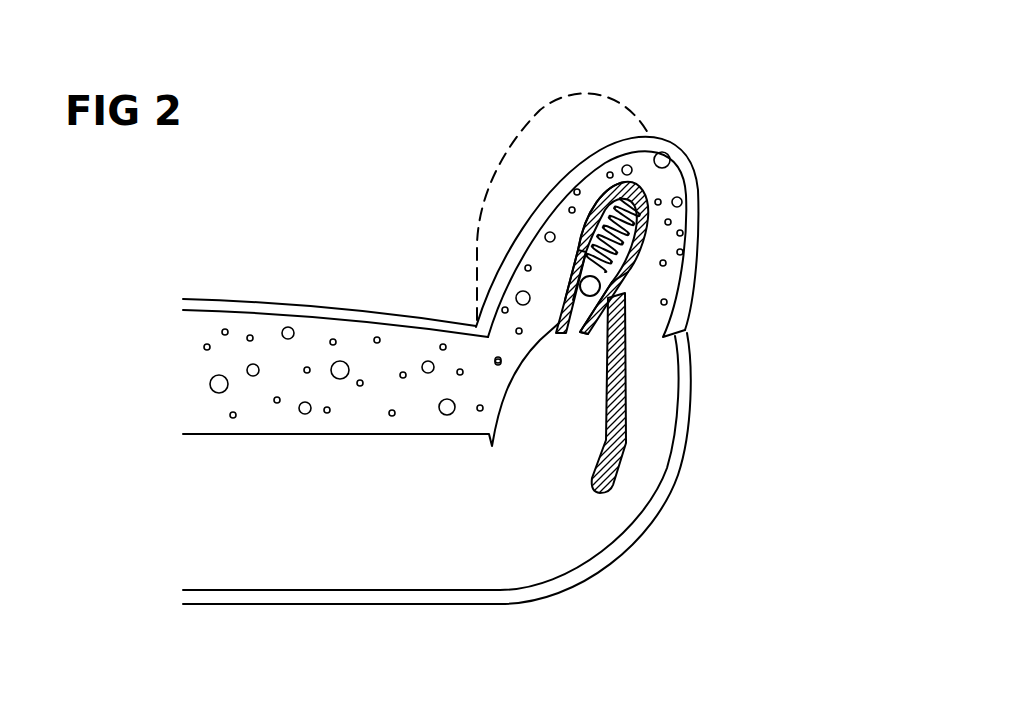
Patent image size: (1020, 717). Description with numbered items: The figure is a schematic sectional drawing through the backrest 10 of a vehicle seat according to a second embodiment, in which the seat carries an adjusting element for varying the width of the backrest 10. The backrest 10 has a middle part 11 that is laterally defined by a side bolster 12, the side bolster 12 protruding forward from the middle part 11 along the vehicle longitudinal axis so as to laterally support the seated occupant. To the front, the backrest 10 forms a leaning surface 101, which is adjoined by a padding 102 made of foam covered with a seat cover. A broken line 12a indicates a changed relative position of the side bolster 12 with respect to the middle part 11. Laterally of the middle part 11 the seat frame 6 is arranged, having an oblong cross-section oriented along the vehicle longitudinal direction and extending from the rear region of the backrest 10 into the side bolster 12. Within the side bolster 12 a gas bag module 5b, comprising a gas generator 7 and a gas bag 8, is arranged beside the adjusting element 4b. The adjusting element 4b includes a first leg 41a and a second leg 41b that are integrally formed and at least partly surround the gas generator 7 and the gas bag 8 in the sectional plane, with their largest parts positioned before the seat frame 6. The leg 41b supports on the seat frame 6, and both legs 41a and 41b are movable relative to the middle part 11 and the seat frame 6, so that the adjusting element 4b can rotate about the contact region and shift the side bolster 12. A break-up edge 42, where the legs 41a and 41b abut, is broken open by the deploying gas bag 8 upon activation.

The backrest 10 is at (610, 592).
The middle part 11 is at (238, 297).
The leaning surface 101 is at (298, 308).
The padding 102 is at (215, 364).
The side bolster 12 is at (695, 321).
The broken line 12a is at (588, 92).
The seat frame 6 is at (607, 468).
The gas generator 7 is at (582, 282).
The gas bag 8 is at (600, 272).
The adjusting element 4b is at (657, 237).
The first leg 41a is at (597, 207).
The second leg 41b is at (620, 263).
The break-up edge 42 is at (634, 203).
The gas bag module 5b is at (573, 240).